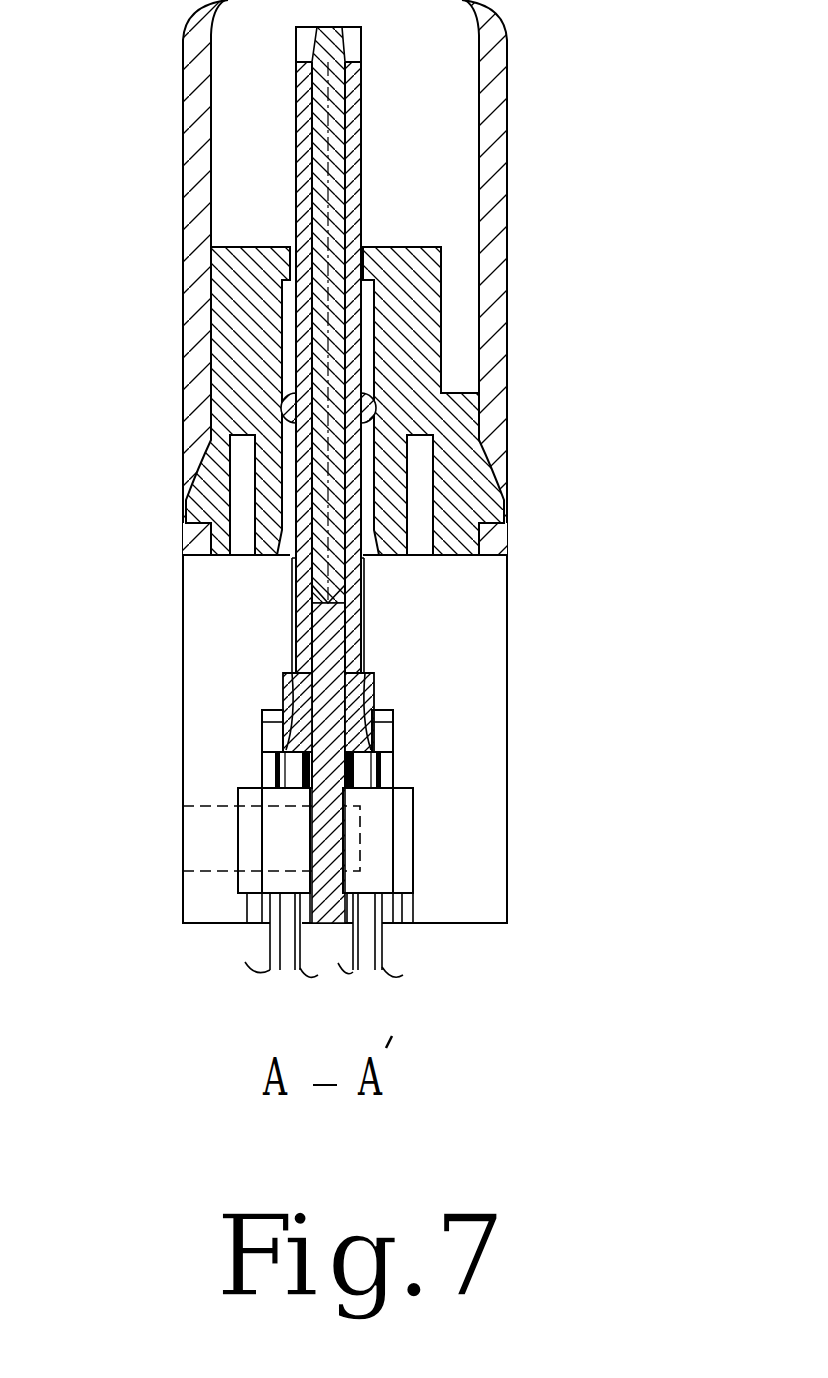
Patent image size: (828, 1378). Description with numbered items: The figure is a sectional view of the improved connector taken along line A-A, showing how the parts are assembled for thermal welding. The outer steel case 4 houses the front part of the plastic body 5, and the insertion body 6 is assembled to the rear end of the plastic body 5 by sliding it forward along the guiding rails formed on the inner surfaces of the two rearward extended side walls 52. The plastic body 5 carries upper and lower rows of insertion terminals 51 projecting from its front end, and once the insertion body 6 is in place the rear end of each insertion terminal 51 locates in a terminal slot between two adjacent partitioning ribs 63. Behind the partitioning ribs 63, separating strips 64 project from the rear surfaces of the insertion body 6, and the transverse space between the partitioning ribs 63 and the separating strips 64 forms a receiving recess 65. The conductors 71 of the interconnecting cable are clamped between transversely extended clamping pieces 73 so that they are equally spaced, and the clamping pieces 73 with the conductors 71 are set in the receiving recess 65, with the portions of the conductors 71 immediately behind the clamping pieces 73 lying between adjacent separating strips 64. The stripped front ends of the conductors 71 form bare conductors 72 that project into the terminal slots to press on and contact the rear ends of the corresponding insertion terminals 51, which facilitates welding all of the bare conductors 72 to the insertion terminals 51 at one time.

The steel case 4 is at (498, 138).
The plastic body 5 is at (457, 423).
The insertion terminal 51 is at (352, 647).
The side wall 52 is at (507, 830).
The insertion body 6 is at (330, 907).
The partitioning rib 63 is at (387, 760).
The separating strip 64 is at (258, 908).
The receiving recess 65 is at (252, 883).
The conductor 71 is at (273, 773).
The bare conductor 72 is at (287, 695).
The clamping piece 73 is at (273, 840).